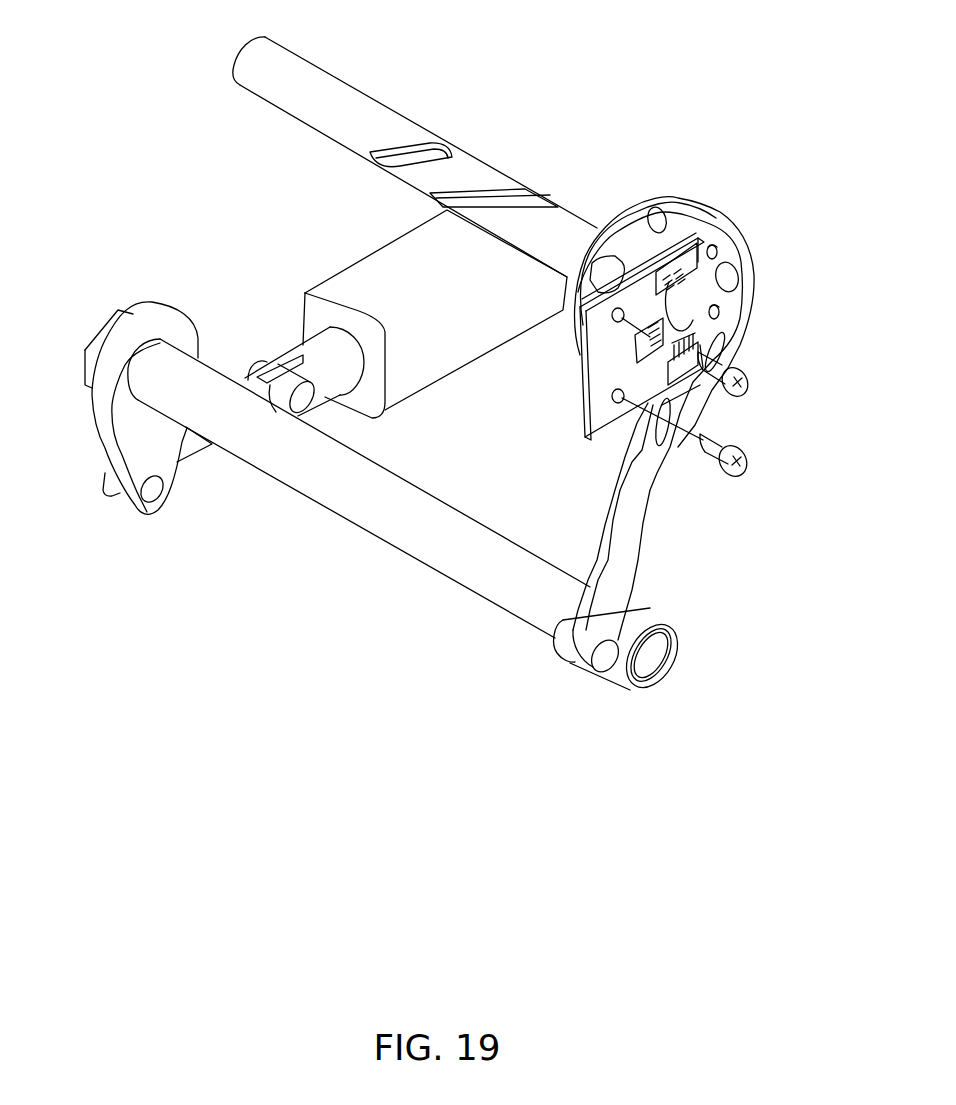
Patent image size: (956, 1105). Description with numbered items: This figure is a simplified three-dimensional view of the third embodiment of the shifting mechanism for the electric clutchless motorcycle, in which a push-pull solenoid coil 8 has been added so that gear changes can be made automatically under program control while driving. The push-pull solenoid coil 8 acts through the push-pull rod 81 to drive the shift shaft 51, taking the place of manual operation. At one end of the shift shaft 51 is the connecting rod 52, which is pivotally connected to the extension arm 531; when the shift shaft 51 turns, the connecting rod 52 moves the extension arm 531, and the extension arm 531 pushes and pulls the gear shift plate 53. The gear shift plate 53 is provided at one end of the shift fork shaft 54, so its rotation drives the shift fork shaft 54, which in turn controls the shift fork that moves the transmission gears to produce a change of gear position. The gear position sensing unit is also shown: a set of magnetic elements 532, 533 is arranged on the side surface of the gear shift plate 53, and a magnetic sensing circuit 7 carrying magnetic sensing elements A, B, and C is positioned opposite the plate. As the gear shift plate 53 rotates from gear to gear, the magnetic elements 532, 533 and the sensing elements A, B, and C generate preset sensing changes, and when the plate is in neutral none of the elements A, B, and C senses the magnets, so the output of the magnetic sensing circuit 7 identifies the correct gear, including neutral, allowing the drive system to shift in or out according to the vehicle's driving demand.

The shift fork shaft 54 is at (370, 112).
The push-pull solenoid coil 8 is at (392, 253).
The shift shaft 51 is at (383, 518).
The push-pull rod 81 is at (132, 433).
The gear shift plate 53 is at (663, 197).
The magnetic element 532 is at (717, 252).
The magnetic element 533 is at (723, 310).
The magnetic sensing circuit 7 is at (590, 370).
The magnetic sensing element A is at (683, 377).
The magnetic sensing element B is at (637, 353).
The magnetic sensing element C is at (676, 262).
The extension arm 531 is at (640, 518).
The connecting rod 52 is at (620, 672).